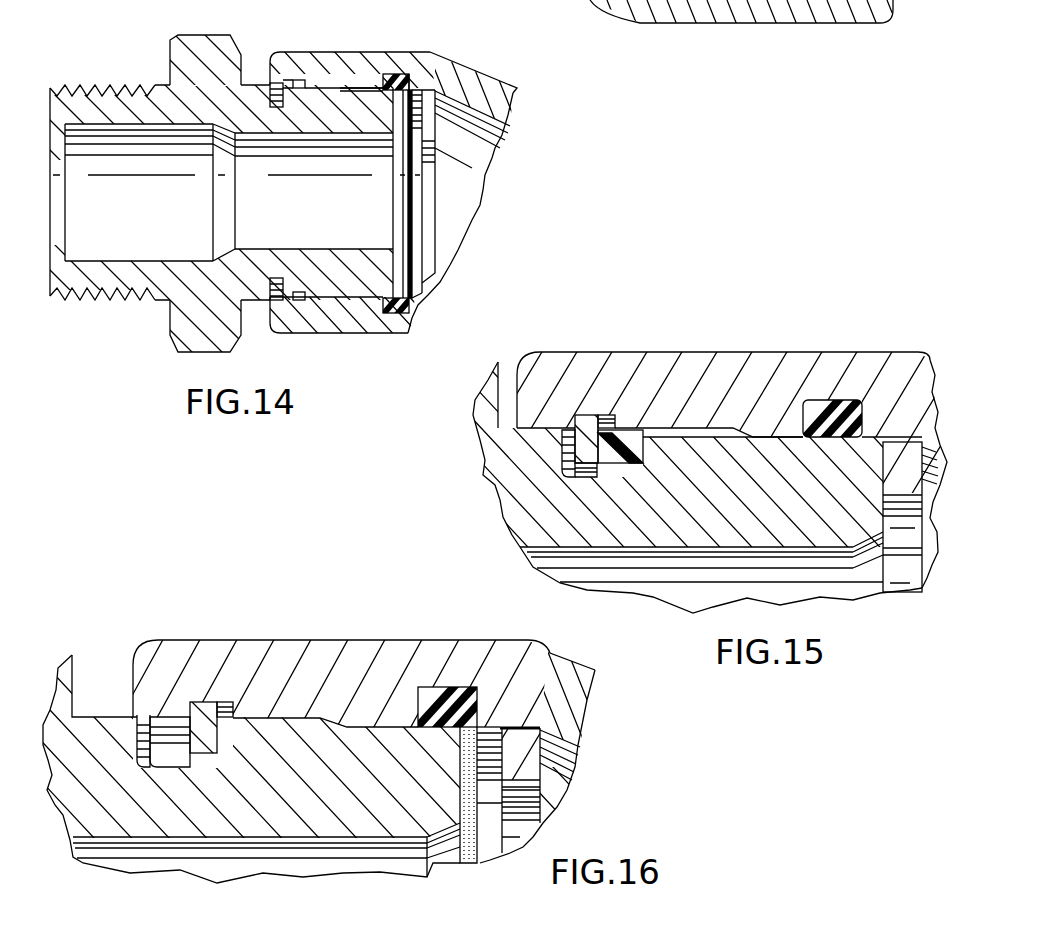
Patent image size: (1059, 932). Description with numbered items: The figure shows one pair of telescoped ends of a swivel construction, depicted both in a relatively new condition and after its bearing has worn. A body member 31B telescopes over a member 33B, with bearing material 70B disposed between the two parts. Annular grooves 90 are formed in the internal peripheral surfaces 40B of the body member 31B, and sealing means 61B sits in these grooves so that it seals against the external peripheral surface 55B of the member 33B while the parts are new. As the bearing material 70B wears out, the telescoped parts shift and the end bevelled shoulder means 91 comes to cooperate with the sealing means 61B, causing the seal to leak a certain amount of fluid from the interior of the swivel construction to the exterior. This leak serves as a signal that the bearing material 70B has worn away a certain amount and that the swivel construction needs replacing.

In FIG. 14, the body member 31B is at (500, 103).
In FIG. 15, the body member 31B is at (908, 362).
In FIG. 16, the body member 31B is at (573, 723).
In FIG. 14, the member 33B is at (175, 52).
In FIG. 15, the member 33B is at (500, 480).
In FIG. 14, the internal peripheral surfaces 40B is at (378, 90).
In FIG. 15, the internal peripheral surfaces 40B is at (787, 437).
In FIG. 16, the internal peripheral surfaces 40B is at (408, 727).
In FIG. 14, the external peripheral surface 55B is at (357, 52).
In FIG. 15, the external peripheral surface 55B is at (755, 432).
In FIG. 16, the external peripheral surface 55B is at (343, 720).
In FIG. 14, the sealing means 61B is at (410, 80).
In FIG. 15, the sealing means 61B is at (812, 430).
In FIG. 16, the sealing means 61B is at (490, 697).
In FIG. 15, the bearing material 70B is at (627, 437).
In FIG. 14, the annular grooves 90 is at (395, 74).
In FIG. 15, the annular grooves 90 is at (823, 417).
In FIG. 16, the annular grooves 90 is at (455, 687).
In FIG. 14, the end bevelled shoulder means 91 is at (447, 59).
In FIG. 15, the end bevelled shoulder means 91 is at (880, 437).
In FIG. 16, the end bevelled shoulder means 91 is at (507, 712).